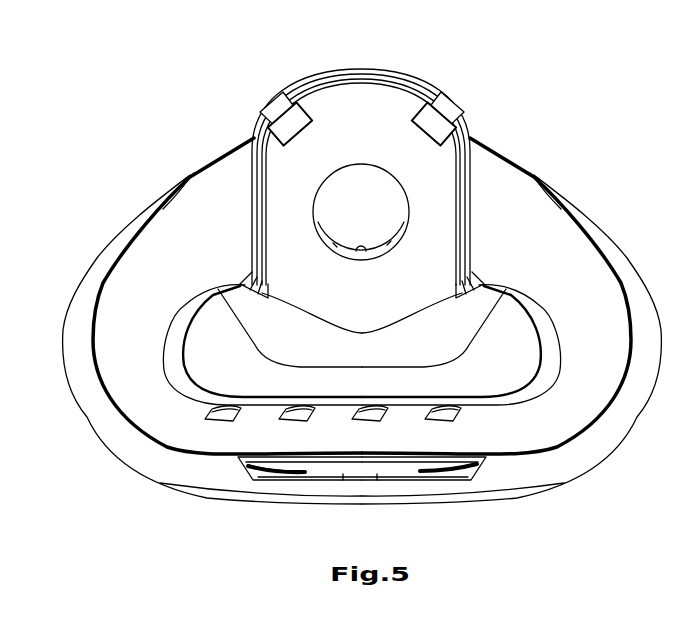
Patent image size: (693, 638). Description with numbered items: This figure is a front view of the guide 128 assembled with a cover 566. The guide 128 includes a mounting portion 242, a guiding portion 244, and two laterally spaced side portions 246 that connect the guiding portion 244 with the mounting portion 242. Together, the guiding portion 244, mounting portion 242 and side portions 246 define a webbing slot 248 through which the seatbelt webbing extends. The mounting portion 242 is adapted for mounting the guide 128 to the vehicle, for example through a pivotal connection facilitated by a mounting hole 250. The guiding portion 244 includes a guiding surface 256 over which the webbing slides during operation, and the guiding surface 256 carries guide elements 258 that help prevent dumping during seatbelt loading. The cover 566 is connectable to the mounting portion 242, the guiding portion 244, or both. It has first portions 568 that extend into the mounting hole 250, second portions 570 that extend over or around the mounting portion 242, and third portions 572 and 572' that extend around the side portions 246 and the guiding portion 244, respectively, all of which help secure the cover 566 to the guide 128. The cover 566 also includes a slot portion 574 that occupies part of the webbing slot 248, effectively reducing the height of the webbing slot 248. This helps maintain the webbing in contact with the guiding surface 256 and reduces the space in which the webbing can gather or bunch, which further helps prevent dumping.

The cover 566 is at (191, 132).
The second portions 570 is at (273, 98).
The guide 128 is at (193, 230).
The mounting portion 242 is at (495, 203).
The third portions 572 is at (331, 296).
The side portions 246 is at (127, 372).
The mounting hole 250 is at (336, 211).
The first portions 568 is at (364, 256).
The slot portion 574 is at (376, 357).
The webbing slot 248 is at (524, 340).
The guide elements 258 is at (210, 438).
The guiding surface 256 is at (266, 422).
The third portions 572' is at (362, 526).
The guiding portion 244 is at (500, 433).